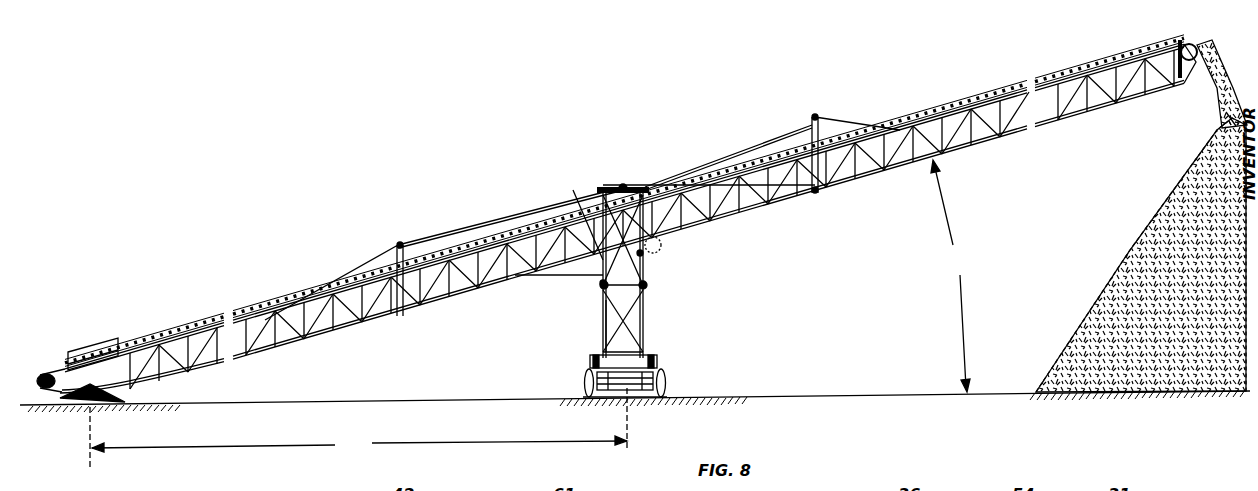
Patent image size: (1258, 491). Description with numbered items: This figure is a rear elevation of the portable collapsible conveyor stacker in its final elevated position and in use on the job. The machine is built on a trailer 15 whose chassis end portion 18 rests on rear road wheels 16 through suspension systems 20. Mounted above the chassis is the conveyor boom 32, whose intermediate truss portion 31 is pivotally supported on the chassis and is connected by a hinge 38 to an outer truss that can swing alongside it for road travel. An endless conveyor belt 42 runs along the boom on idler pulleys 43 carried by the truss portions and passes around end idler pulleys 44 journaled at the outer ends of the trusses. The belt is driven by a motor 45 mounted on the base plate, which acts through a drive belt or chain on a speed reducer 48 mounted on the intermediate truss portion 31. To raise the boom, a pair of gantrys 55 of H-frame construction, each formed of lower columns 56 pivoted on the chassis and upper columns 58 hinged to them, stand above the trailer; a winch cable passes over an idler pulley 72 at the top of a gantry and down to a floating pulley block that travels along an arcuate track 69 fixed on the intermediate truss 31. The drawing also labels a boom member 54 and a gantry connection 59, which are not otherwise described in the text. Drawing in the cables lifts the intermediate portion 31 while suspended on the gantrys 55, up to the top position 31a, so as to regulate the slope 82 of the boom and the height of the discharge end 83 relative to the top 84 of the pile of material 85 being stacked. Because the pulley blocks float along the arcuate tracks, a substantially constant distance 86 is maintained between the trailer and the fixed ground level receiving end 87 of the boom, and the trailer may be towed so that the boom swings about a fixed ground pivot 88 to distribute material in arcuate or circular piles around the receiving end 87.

The trailer 15 is at (592, 361).
The rear road wheels 16 is at (583, 386).
The end portion of the trailer chassis 18 is at (656, 361).
The suspension systems 20 is at (637, 395).
The intermediate truss portion 31 is at (511, 215).
The top position 31a is at (637, 177).
The conveyor boom 32 is at (777, 205).
The hinge 38 is at (392, 260).
The endless conveyor belt 42 is at (267, 310).
The idler pulleys 43 is at (188, 335).
The end idler pulleys 44 is at (44, 380).
The motor 45 is at (647, 256).
The speed reducer 48 is at (661, 250).
The upper king post 54 is at (813, 127).
The gantrys 55 is at (645, 320).
The lower columns 56 is at (603, 325).
The upper columns 58 is at (597, 222).
The pivot connections 59 is at (603, 290).
The arcuate track 69 is at (600, 285).
The idler pulley 72 is at (623, 183).
The slope 82 is at (950, 276).
The discharge end 83 is at (1212, 58).
The top of the pile 84 is at (1228, 118).
The pile of material 85 is at (1172, 232).
The constant distance 86 is at (358, 428).
The ground level receiving end 87 is at (52, 378).
The fixed ground pivot 88 is at (108, 398).